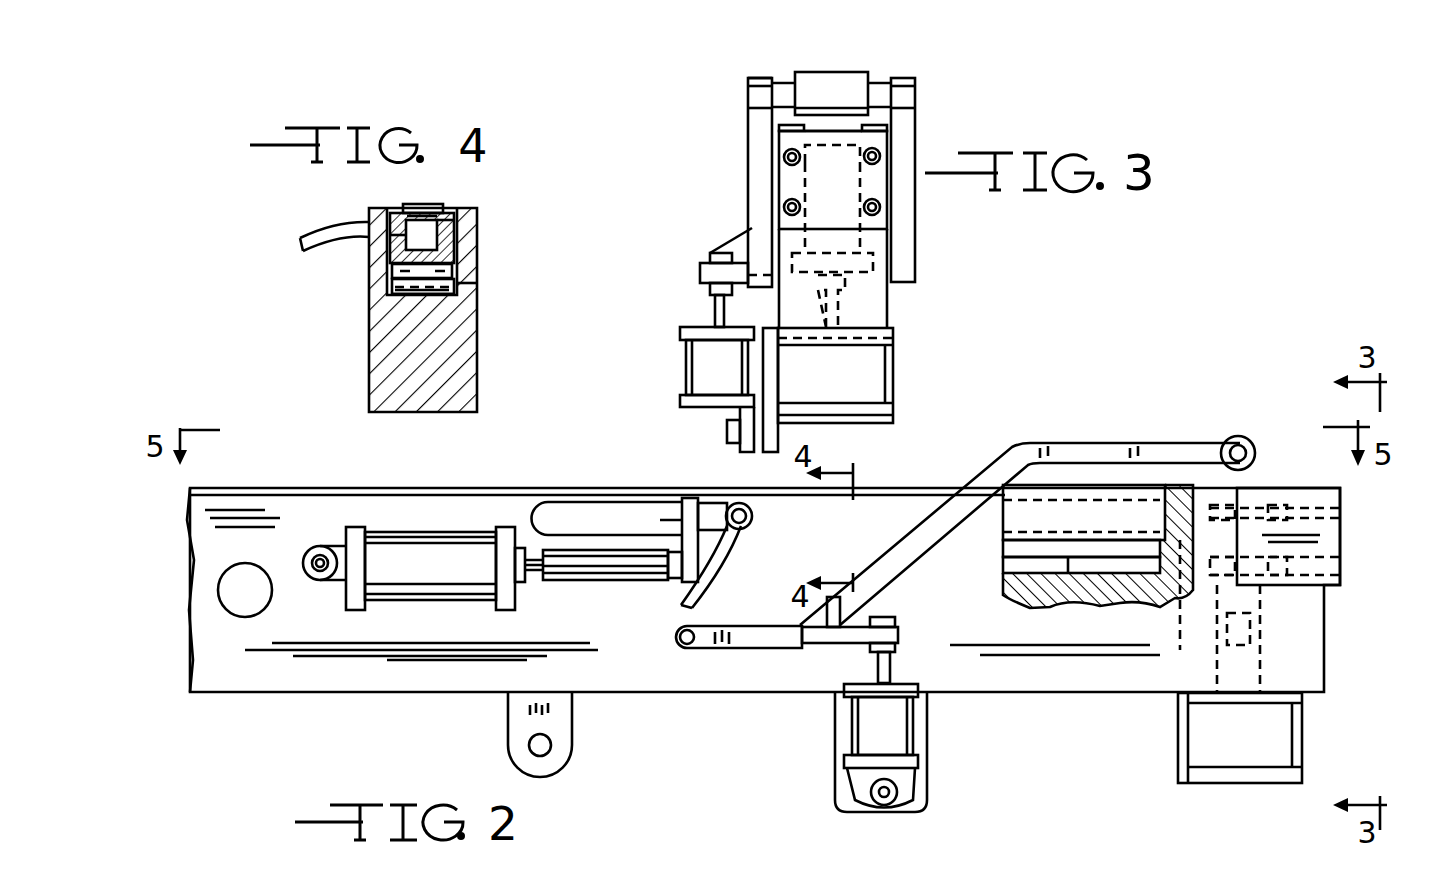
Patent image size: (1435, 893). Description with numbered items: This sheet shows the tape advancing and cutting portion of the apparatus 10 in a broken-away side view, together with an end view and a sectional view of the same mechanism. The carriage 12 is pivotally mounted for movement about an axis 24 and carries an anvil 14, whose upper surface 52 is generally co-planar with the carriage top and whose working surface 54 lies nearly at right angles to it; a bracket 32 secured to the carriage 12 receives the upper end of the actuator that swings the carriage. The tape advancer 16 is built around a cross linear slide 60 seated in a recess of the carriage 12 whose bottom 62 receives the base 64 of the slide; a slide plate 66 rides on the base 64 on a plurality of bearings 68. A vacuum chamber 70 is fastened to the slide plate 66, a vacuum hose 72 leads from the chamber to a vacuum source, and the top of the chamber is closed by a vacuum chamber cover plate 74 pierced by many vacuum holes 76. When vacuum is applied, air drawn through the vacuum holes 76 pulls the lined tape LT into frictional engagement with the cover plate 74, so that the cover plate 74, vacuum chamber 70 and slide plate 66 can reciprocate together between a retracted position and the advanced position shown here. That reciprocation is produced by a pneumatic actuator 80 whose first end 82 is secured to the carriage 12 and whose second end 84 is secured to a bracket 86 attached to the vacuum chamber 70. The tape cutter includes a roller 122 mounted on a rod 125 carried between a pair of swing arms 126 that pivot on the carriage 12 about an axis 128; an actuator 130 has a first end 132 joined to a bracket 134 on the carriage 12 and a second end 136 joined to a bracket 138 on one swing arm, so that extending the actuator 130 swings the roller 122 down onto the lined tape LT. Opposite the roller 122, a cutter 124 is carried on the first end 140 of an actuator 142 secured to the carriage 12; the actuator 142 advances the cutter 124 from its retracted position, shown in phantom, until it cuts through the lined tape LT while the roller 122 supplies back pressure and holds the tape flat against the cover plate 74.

In FIG. 4, the apparatus 10 is at (250, 291).
In FIG. 3, the apparatus 10 is at (1050, 268).
In FIG. 2, the apparatus 10 is at (705, 750).
In FIG. 4, the carriage 12 is at (484, 378).
In FIG. 3, the carriage 12 is at (898, 300).
In FIG. 2, the carriage 12 is at (611, 708).
In FIG. 2, the anvil 14 is at (1343, 592).
In FIG. 4, the tape advancer 16 is at (342, 196).
In FIG. 2, the tape advancer 16 is at (924, 477).
In FIG. 2, the axis 24 is at (245, 590).
In FIG. 2, the bracket 32 is at (508, 713).
In FIG. 4, the upper surface 52 is at (397, 212).
In FIG. 3, the upper surface 52 is at (812, 128).
In FIG. 2, the upper surface 52 is at (1268, 488).
In FIG. 2, the working surface 54 is at (1340, 540).
In FIG. 4, the cross linear slide 60 is at (470, 281).
In FIG. 3, the cross linear slide 60 is at (885, 266).
In FIG. 4, the bottom 62 is at (410, 288).
In FIG. 2, the bottom 62 is at (1003, 562).
In FIG. 4, the base 64 is at (462, 285).
In FIG. 3, the base 64 is at (900, 291).
In FIG. 2, the base 64 is at (1030, 605).
In FIG. 4, the slide plate 66 is at (466, 264).
In FIG. 3, the slide plate 66 is at (873, 262).
In FIG. 2, the slide plate 66 is at (1085, 590).
In FIG. 4, the bearings 68 is at (385, 298).
In FIG. 3, the bearings 68 is at (780, 293).
In FIG. 2, the bearings 68 is at (1057, 553).
In FIG. 4, the vacuum chamber 70 is at (465, 231).
In FIG. 2, the vacuum chamber 70 is at (1135, 600).
In FIG. 4, the vacuum hose 72 is at (300, 236).
In FIG. 2, the vacuum hose 72 is at (703, 590).
In FIG. 4, the vacuum chamber cover plate 74 is at (445, 212).
In FIG. 2, the vacuum chamber cover plate 74 is at (1084, 529).
In FIG. 4, the vacuum holes 76 is at (398, 236).
In FIG. 2, the actuator 80 is at (430, 530).
In FIG. 2, the first end 82 is at (320, 546).
In FIG. 2, the second end 84 is at (650, 575).
In FIG. 2, the bracket 86 is at (672, 503).
In FIG. 3, the roller 122 is at (855, 128).
In FIG. 2, the roller 122 is at (1228, 447).
In FIG. 3, the cutter 124 is at (865, 150).
In FIG. 2, the cutter 124 is at (1260, 537).
In FIG. 3, the rod 125 is at (785, 82).
In FIG. 2, the rod 125 is at (1238, 436).
In FIG. 3, the swing arms 126 is at (748, 158).
In FIG. 2, the swing arms 126 is at (1020, 452).
In FIG. 2, the axis 128 is at (683, 651).
In FIG. 3, the actuator 130 is at (686, 353).
In FIG. 2, the actuator 130 is at (852, 730).
In FIG. 3, the first end 132 is at (740, 458).
In FIG. 2, the first end 132 is at (862, 808).
In FIG. 3, the bracket 134 is at (783, 437).
In FIG. 2, the bracket 134 is at (925, 808).
In FIG. 2, the second end 136 is at (893, 668).
In FIG. 3, the bracket 138 is at (718, 256).
In FIG. 2, the bracket 138 is at (833, 643).
In FIG. 3, the first end 140 is at (840, 305).
In FIG. 2, the first end 140 is at (1250, 645).
In FIG. 3, the actuator 142 is at (893, 383).
In FIG. 2, the actuator 142 is at (1302, 745).
In FIG. 4, the lined tape LT is at (428, 211).
In FIG. 3, the lined tape LT is at (860, 125).